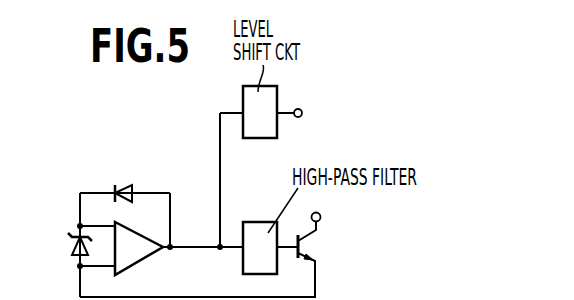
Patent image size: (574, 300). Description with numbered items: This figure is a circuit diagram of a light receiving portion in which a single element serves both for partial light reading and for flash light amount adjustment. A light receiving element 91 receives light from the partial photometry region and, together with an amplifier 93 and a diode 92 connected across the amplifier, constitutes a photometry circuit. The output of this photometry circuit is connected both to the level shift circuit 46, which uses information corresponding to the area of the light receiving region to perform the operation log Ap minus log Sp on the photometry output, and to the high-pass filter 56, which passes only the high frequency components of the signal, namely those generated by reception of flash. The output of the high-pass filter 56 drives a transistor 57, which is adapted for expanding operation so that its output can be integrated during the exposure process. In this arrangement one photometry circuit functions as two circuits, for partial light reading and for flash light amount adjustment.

The level shift circuit 46 is at (277, 100).
The high-pass filter 56 is at (258, 222).
The transistor 57 is at (310, 248).
The light receiving element 91 is at (72, 247).
The diode 92 is at (128, 184).
The amplifier 93 is at (150, 258).